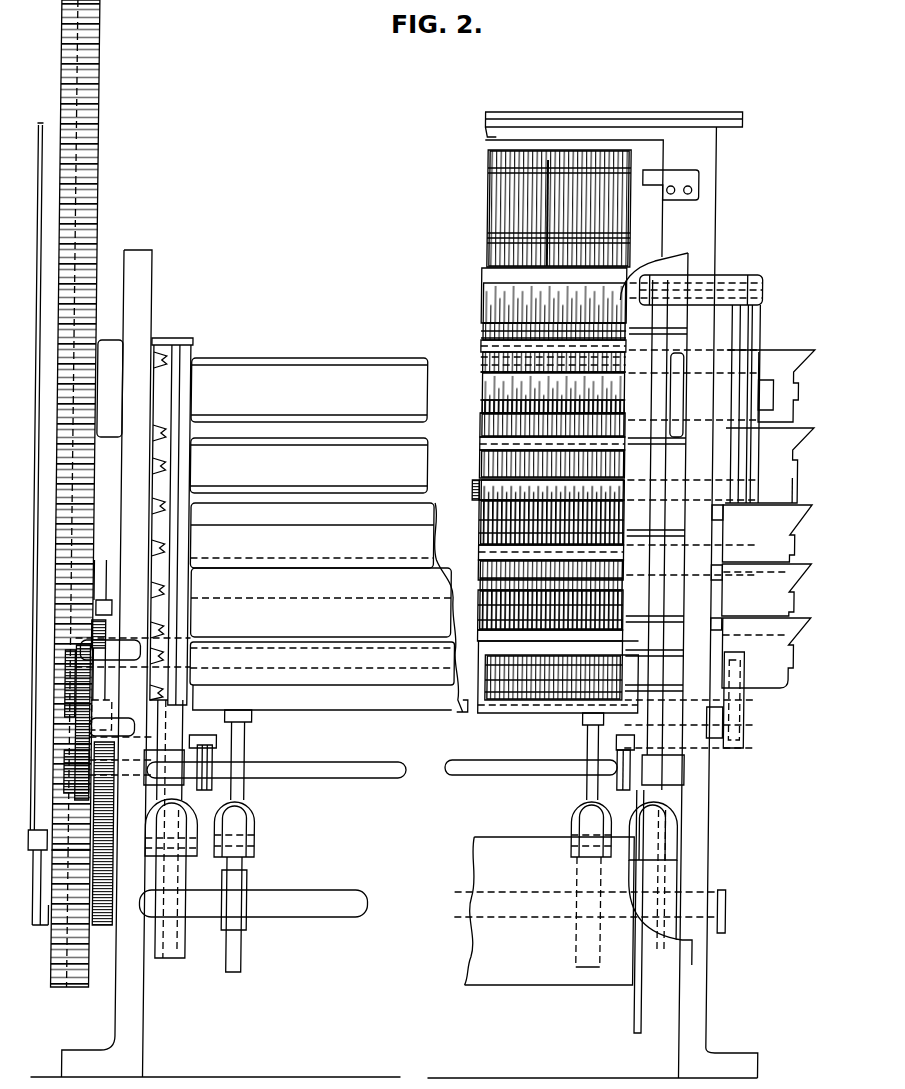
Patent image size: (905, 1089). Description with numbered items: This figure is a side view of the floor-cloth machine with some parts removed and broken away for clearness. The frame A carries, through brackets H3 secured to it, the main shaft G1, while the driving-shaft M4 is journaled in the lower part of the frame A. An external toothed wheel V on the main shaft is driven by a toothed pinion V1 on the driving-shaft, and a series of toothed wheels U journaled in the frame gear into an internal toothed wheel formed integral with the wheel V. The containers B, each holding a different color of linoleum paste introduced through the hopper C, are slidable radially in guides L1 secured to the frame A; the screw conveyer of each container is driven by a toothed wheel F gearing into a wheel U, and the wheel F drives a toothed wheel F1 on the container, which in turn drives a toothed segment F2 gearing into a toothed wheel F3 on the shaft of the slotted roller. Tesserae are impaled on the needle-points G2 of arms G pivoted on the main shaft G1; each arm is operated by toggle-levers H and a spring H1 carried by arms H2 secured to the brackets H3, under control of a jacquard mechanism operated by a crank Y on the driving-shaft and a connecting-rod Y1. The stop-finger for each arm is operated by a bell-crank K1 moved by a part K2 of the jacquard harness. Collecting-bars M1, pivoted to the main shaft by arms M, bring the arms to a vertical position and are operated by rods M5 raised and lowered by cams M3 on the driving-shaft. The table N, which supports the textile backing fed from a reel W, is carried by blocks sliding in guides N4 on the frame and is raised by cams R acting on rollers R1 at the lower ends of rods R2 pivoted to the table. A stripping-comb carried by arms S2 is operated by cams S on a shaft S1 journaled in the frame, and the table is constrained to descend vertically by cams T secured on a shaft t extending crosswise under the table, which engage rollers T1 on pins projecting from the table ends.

The frame A is at (399, 602).
The containers B is at (323, 522).
The table N is at (322, 699).
The shaft t is at (466, 705).
The guides L1 is at (167, 370).
The external toothed wheel V is at (79, 425).
The toothed pinion V1 is at (69, 918).
The crank Y is at (34, 887).
The connecting-rod Y1 is at (46, 486).
The guides N4 is at (724, 758).
The toothed wheel F is at (80, 685).
The toothed wheel F1 is at (72, 660).
The toothed segment F2 is at (105, 665).
The toothed wheel F3 is at (110, 630).
The toothed wheels U is at (78, 750).
The rods M5 is at (416, 619).
The cams S is at (408, 780).
The shaft S1 is at (382, 761).
The arms S2 is at (415, 729).
The cams R is at (240, 952).
The rollers R1 is at (246, 852).
The rods R2 is at (414, 755).
The cams M3 is at (419, 882).
The driving-shaft M4 is at (432, 915).
The reel W is at (550, 911).
The toggle-levers H is at (559, 208).
The spring H1 is at (547, 167).
The arms H2 is at (688, 198).
The brackets H3 is at (488, 134).
The bell-crank K1 is at (484, 346).
The harness part K2 is at (486, 304).
The arms G is at (484, 466).
The main shaft G1 is at (484, 412).
The needle-points G2 is at (490, 586).
The collecting-bars M1 is at (556, 494).
The arms M is at (752, 440).
The hopper C is at (762, 519).
The cams T is at (745, 732).
The rollers T1 is at (746, 706).